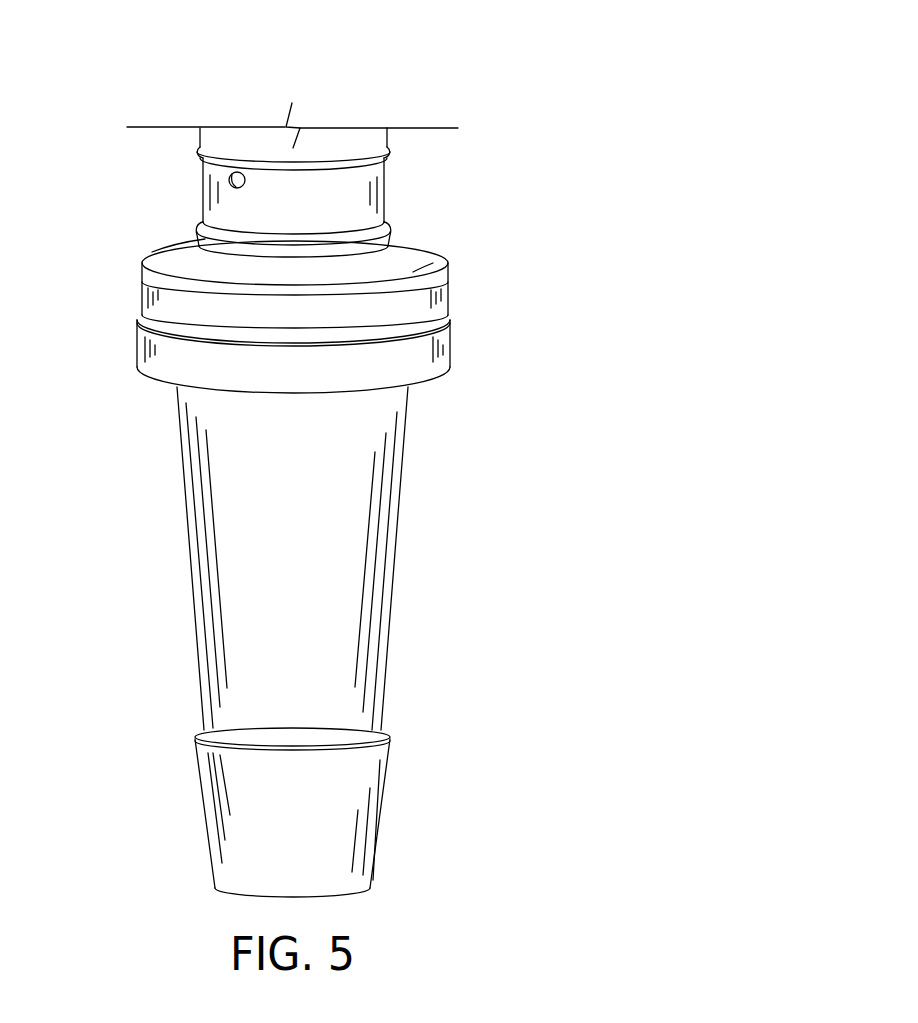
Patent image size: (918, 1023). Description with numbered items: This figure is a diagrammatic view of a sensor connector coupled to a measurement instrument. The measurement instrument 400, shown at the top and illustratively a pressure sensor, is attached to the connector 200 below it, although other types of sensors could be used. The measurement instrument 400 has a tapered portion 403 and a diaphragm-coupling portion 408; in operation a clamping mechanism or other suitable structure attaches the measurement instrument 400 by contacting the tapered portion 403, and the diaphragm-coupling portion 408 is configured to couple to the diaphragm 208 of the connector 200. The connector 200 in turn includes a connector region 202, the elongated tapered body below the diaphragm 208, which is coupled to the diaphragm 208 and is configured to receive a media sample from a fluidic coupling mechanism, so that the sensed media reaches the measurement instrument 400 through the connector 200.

The measurement instrument 400 is at (542, 82).
The tapered portion 403 is at (418, 245).
The diaphragm-coupling portion 408 is at (178, 302).
The connector 200 is at (540, 561).
The diaphragm 208 is at (446, 313).
The connector region 202 is at (405, 633).